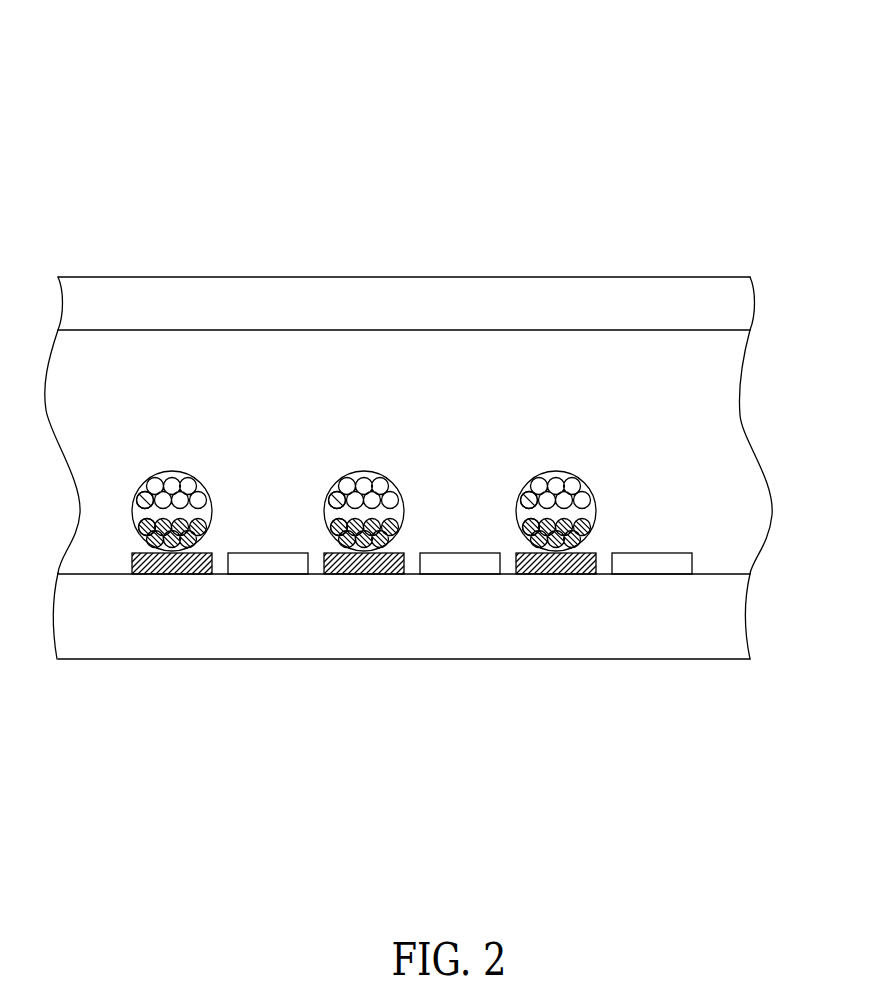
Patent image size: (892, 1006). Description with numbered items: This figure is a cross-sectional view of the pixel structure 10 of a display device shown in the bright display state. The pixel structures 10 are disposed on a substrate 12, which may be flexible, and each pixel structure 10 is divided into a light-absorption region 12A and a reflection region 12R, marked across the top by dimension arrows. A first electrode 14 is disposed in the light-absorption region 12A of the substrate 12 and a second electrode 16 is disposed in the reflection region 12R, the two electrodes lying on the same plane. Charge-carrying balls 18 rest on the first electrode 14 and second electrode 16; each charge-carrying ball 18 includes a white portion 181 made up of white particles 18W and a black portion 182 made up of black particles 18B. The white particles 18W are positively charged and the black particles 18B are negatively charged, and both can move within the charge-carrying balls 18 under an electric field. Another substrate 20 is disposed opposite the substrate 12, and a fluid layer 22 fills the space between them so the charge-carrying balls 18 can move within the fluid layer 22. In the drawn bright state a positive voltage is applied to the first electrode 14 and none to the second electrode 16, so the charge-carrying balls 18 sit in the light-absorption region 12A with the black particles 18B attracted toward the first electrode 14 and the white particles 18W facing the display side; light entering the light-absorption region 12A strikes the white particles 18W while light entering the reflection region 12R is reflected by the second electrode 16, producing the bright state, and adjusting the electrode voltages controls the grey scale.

The pixel structure 10 is at (723, 97).
The substrate 12 is at (708, 649).
The light-absorption region 12A is at (212, 252).
The reflection region 12R is at (308, 252).
The first electrode 14 is at (173, 574).
The second electrode 16 is at (270, 574).
The charge-carrying ball 18 is at (168, 436).
The white portion 181 is at (180, 476).
The black portion 182 is at (210, 525).
The white particle 18W is at (138, 497).
The black particle 18B is at (139, 527).
The substrate 20 is at (708, 317).
The fluid layer 22 is at (738, 456).